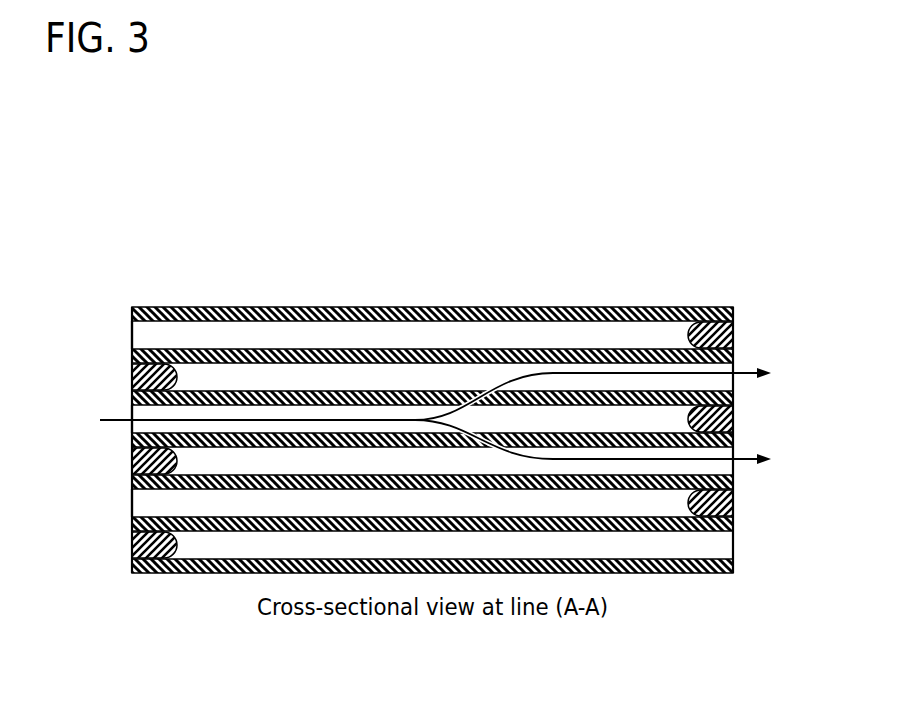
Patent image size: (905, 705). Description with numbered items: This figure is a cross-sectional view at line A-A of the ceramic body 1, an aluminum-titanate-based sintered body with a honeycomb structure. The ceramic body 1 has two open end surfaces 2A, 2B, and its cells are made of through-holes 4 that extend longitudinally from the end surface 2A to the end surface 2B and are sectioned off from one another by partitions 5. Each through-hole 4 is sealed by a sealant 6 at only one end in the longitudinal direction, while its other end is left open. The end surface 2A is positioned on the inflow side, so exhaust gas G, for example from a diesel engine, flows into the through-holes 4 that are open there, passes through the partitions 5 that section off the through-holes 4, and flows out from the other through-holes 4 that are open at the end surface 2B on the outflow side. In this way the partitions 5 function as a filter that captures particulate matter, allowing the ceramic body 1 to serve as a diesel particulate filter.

The ceramic body 1 is at (196, 262).
The end surface 2A is at (132, 546).
The end surface 2B is at (737, 502).
The through-holes 4 is at (143, 340).
The partitions 5 is at (306, 350).
The sealant 6 is at (735, 332).
The exhaust gas G is at (424, 416).